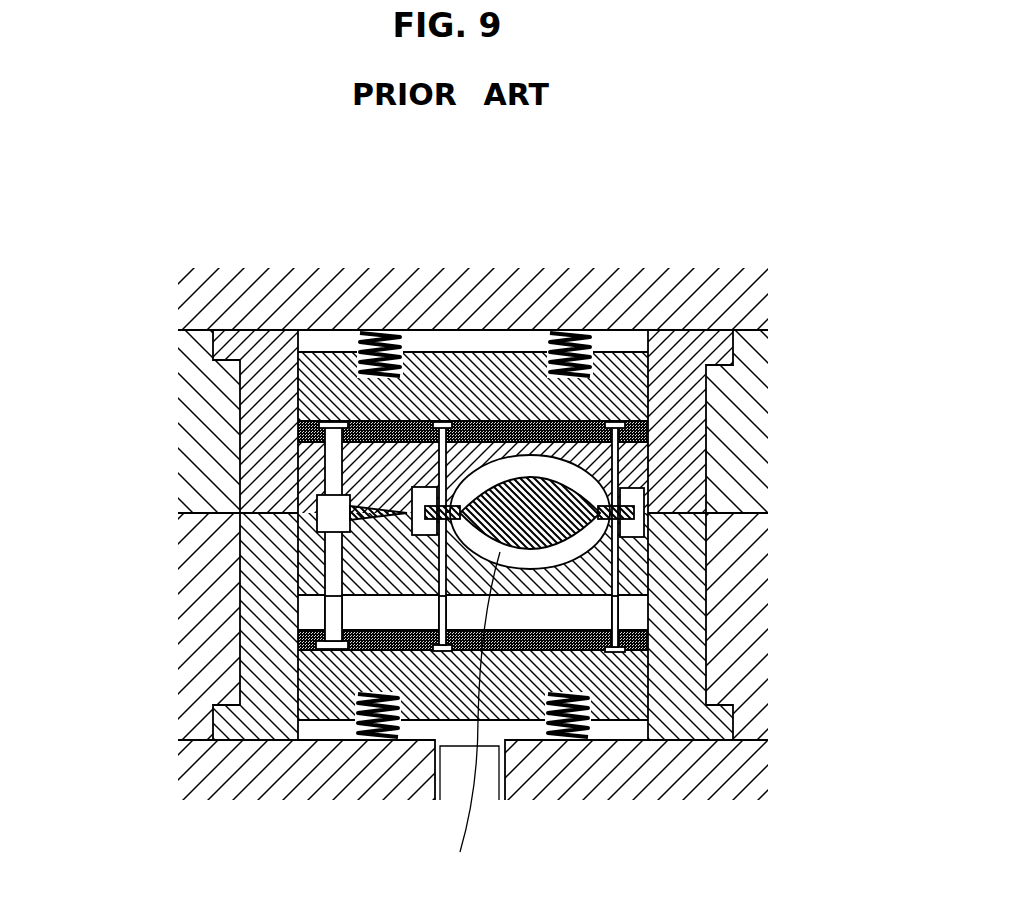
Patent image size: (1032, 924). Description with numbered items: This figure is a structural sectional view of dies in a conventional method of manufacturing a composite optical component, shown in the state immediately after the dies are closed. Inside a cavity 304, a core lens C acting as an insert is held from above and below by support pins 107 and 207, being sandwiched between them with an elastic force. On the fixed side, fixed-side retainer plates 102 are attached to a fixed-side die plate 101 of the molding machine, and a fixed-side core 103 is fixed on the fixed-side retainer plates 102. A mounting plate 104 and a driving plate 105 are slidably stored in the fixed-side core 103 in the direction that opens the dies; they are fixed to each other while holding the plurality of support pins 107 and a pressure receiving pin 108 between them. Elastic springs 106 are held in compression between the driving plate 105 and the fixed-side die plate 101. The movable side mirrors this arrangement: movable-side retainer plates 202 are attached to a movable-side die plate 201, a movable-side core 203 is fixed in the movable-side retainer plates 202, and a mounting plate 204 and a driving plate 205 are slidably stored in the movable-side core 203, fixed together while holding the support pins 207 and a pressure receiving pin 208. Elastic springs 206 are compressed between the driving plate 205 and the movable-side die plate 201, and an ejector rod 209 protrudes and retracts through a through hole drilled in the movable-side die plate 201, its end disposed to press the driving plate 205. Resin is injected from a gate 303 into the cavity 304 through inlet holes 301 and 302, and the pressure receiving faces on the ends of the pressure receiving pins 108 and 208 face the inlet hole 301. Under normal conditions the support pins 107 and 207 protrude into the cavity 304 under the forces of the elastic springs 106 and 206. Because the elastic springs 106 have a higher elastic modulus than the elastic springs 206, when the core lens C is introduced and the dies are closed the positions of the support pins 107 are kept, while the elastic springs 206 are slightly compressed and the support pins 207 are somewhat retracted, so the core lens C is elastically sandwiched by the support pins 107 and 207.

The fixed-side die plate 101 is at (745, 322).
The fixed-side retainer plates 102 is at (750, 398).
The fixed-side core 103 is at (690, 442).
The mounting plate 104 is at (305, 428).
The driving plate 105 is at (310, 392).
The elastic springs 106 is at (390, 326).
The support pins 107 is at (447, 423).
The pressure receiving pin 108 is at (333, 420).
The movable-side die plate 201 is at (737, 775).
The movable-side retainer plates 202 is at (752, 652).
The movable-side core 203 is at (682, 598).
The mounting plate 204 is at (320, 633).
The driving plate 205 is at (317, 685).
The elastic springs 206 is at (383, 742).
The support pins 207 is at (440, 618).
The pressure receiving pin 208 is at (335, 617).
The ejector rod 209 is at (487, 778).
The inlet hole 301 is at (333, 523).
The inlet hole 302 is at (350, 510).
The gate 303 is at (410, 533).
The cavity 304 is at (648, 525).
The core lens C is at (475, 714).